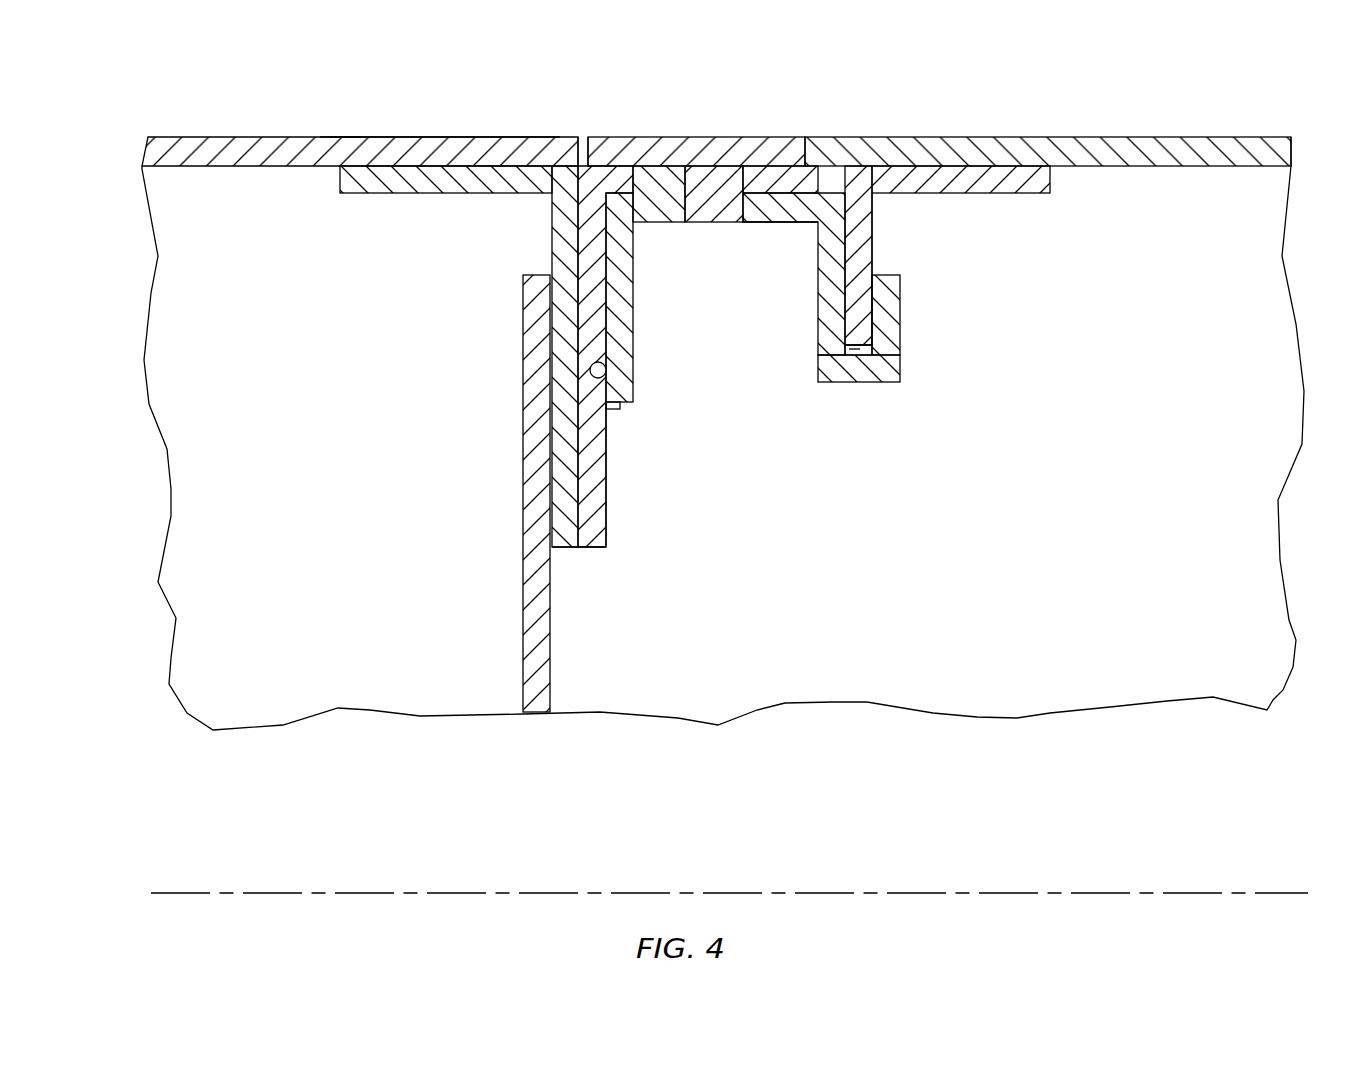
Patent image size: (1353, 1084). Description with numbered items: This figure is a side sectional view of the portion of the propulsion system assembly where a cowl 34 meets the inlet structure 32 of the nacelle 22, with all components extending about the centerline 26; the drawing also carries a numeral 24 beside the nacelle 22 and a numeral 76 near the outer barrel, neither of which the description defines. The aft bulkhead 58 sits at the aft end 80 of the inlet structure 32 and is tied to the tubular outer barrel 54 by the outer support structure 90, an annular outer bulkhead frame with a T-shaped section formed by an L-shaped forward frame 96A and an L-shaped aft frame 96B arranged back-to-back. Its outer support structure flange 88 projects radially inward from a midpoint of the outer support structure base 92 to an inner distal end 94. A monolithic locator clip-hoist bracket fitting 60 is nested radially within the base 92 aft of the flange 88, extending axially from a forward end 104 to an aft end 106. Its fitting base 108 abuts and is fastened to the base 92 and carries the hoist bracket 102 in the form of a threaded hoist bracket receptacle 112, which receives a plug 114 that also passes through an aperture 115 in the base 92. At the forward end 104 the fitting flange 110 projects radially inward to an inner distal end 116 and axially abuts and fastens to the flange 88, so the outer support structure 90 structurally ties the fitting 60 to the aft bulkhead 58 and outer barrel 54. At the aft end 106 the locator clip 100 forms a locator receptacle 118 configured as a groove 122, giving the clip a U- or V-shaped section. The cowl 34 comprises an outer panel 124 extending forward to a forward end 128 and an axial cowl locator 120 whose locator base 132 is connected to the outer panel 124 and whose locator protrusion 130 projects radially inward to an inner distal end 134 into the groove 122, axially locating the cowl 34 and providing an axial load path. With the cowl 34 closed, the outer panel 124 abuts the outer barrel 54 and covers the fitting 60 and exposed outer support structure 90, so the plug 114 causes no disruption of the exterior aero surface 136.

The nacelle 22 is at (684, 102).
The floor panel assembly 24 is at (716, 102).
The centerline 26 is at (1295, 893).
The inlet structure 32 is at (205, 124).
The cowl 34 is at (1140, 124).
The outer barrel 54 is at (340, 137).
The aft bulkhead 58 is at (553, 672).
The locator clip-hoist bracket fitting 60 is at (886, 283).
The seam 76 is at (578, 137).
The aft end of the inlet structure 80 is at (951, 319).
The outer support structure flange 88 is at (608, 512).
The outer support structure 90 is at (576, 356).
The outer support structure base 92 is at (370, 195).
The inner distal end of the outer support structure flange 94 is at (593, 550).
The forward frame 96A is at (549, 473).
The aft frame 96B is at (609, 465).
The locator clip 100 is at (884, 393).
The hoist bracket 102 is at (760, 230).
The forward end of the fitting 104 is at (606, 372).
The aft end of the fitting 106 is at (905, 360).
The fitting base 108 is at (795, 163).
The fitting flange 110 is at (637, 316).
The hoist bracket receptacle 112 is at (690, 222).
The plug 114 is at (718, 185).
The aperture 115 is at (780, 188).
The inner distal end of the fitting flange 116 is at (620, 406).
The locator receptacle 118 is at (882, 413).
The axial cowl locator 120 is at (876, 232).
The groove 122 is at (862, 357).
The outer panel 124 is at (1291, 154).
The forward end of the cowl 128 is at (588, 137).
The locator protrusion 130 is at (875, 260).
The locator base 132 is at (1005, 195).
The inner distal end of the locator protrusion 134 is at (845, 350).
The exterior aero surface 136 is at (453, 130).